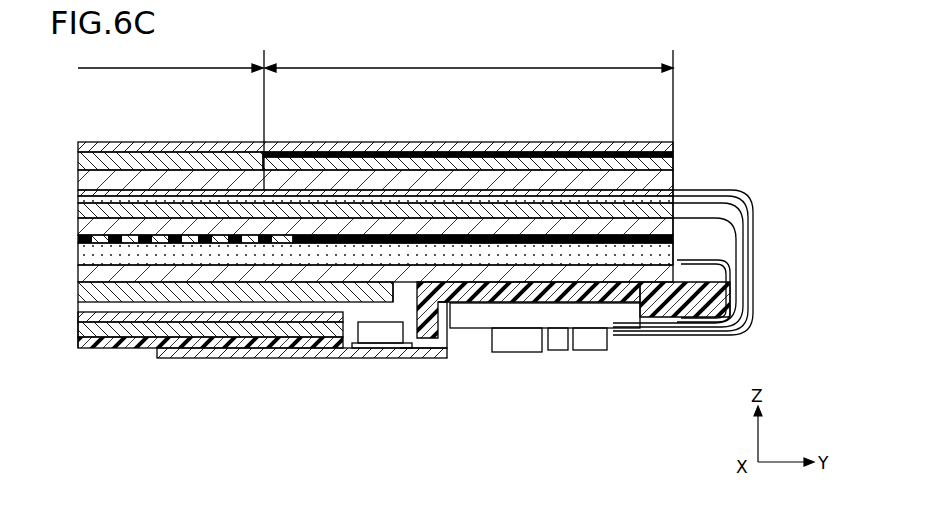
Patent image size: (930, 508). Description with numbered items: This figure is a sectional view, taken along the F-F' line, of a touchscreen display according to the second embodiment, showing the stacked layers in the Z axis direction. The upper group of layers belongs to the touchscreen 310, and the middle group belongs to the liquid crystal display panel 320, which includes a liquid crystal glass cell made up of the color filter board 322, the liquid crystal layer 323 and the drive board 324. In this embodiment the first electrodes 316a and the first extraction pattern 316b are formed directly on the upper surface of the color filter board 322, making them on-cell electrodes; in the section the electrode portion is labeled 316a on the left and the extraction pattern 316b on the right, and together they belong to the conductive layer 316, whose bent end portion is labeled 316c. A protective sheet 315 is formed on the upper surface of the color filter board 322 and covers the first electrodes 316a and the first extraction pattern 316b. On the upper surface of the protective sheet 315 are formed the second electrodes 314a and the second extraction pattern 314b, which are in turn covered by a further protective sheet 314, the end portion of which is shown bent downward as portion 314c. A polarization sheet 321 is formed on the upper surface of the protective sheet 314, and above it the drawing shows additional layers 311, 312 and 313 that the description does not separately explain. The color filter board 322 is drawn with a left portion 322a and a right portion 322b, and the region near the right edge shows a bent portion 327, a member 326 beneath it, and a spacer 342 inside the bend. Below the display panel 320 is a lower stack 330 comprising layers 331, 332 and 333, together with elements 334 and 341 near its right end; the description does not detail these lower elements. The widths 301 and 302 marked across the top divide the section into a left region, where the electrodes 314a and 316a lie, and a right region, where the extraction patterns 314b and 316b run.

The first region 301 is at (171, 117).
The second region 302 is at (469, 154).
The touchscreen 310 is at (68, 142).
The first layer 311 is at (676, 146).
The second layer 312 is at (676, 155).
The third layer 313 is at (676, 164).
The protective sheet 314 is at (700, 196).
The second electrodes 314a is at (133, 190).
The second extraction pattern 314b is at (312, 190).
The bent portion of layer 314 314c is at (755, 248).
The protective sheet 315 is at (700, 204).
The protective layer 316 is at (375, 210).
The first electrodes 316a is at (203, 203).
The first extraction pattern 316b is at (412, 203).
The bent portion of layer 316 316c is at (746, 272).
The liquid crystal display panel 320 is at (68, 222).
The polarization sheet 321 is at (678, 181).
The color filter board 322 is at (632, 275).
The first substrate portion 322a is at (233, 243).
The second substrate portion 322b is at (347, 243).
The liquid crystal layer 323 is at (575, 265).
The drive board 324 is at (535, 282).
The flexible circuit board 326 is at (476, 328).
The bent substrate portion 327 is at (702, 335).
The lower stack 330 is at (68, 305).
The cushion layer 331 is at (96, 348).
The support layer 332 is at (132, 348).
The metal plate 333 is at (176, 358).
The bottom member 334 is at (380, 350).
The filler 341 is at (310, 343).
The spacer 342 is at (740, 316).